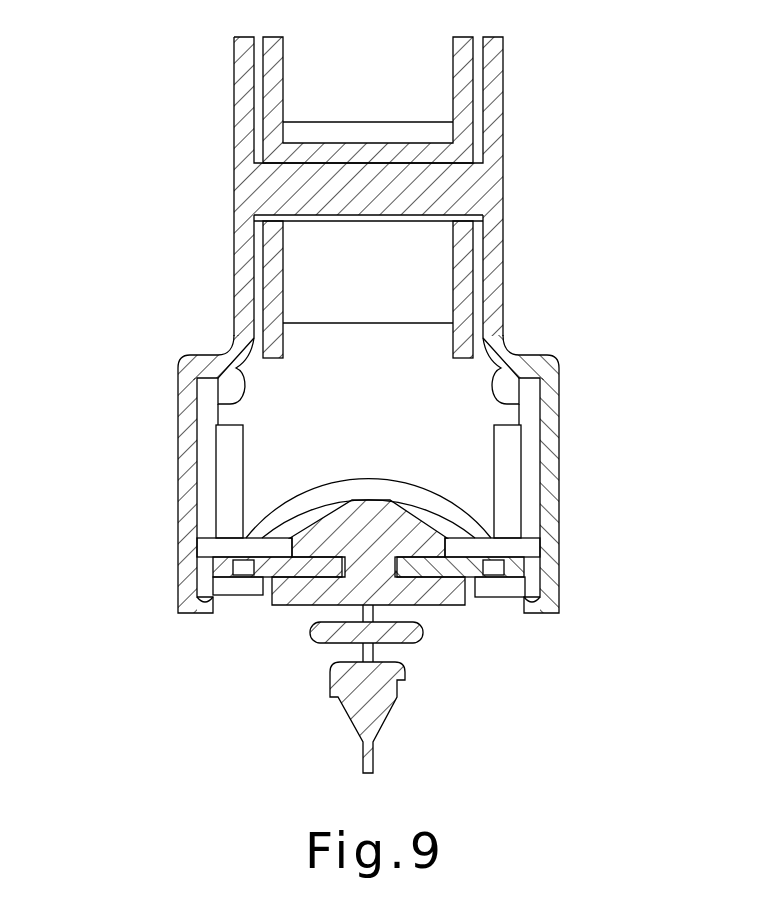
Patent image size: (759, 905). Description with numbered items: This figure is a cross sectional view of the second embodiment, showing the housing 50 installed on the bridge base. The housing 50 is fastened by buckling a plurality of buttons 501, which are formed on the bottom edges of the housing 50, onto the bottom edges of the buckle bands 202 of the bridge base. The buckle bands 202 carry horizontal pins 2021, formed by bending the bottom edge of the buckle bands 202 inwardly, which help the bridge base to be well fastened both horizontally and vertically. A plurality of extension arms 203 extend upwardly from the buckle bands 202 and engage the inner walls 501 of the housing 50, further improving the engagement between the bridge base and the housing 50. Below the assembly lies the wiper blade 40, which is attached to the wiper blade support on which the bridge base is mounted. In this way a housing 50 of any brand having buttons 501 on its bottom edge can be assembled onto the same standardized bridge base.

The housing 50 is at (503, 185).
The buttons 501 is at (234, 373).
The buckle bands 202 is at (528, 580).
The horizontal pins 2021 is at (497, 587).
The extension arms 203 is at (214, 480).
The wiper blade 40 is at (365, 718).